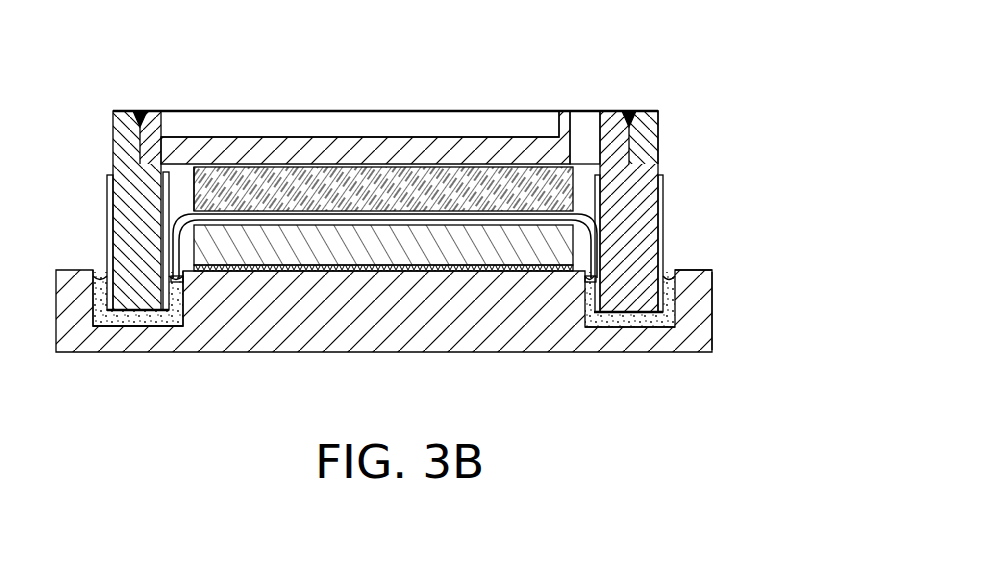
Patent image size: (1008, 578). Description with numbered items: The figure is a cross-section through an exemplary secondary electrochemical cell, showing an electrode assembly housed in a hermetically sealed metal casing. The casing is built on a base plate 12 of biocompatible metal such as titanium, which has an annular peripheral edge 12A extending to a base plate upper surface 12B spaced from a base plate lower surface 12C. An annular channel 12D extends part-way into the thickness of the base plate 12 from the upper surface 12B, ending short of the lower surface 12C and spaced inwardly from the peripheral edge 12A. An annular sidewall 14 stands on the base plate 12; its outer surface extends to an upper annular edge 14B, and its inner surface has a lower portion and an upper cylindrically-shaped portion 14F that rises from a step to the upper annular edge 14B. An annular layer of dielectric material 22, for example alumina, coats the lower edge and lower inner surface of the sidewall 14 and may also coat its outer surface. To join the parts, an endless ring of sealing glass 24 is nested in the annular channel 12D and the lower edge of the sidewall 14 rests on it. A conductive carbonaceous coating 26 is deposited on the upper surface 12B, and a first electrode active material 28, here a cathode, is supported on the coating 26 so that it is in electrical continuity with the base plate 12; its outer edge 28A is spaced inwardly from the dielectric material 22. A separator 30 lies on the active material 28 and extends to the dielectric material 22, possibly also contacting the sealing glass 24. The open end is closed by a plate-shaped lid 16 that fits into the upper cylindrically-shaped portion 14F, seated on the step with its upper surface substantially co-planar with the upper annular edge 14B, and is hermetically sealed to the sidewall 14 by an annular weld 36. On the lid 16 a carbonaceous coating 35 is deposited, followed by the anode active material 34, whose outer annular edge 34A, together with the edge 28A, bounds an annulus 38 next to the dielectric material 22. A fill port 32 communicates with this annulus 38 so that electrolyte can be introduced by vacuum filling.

The base plate 12 is at (70, 347).
The annular peripheral edge 12A is at (712, 310).
The base plate upper surface 12B is at (694, 270).
The base plate lower surface 12C is at (213, 352).
The annular channel 12D is at (661, 350).
The annular sidewall 14 is at (143, 212).
The upper annular edge 14B is at (122, 110).
The upper cylindrically-shaped portion 14F is at (647, 140).
The lid 16 is at (177, 112).
The dielectric material 22 is at (662, 208).
The sealing glass 24 is at (592, 318).
The conductive carbonaceous coating 26 is at (390, 270).
The first electrode active material 28 is at (320, 255).
The outer edge 28A is at (175, 238).
The separator 30 is at (578, 276).
The fill port 32 is at (575, 110).
The anode active material 34 is at (330, 190).
The outer annular edge 34A is at (165, 190).
The carbonaceous coating 35 is at (270, 150).
The annular weld 36 is at (628, 110).
The annulus 38 is at (660, 168).